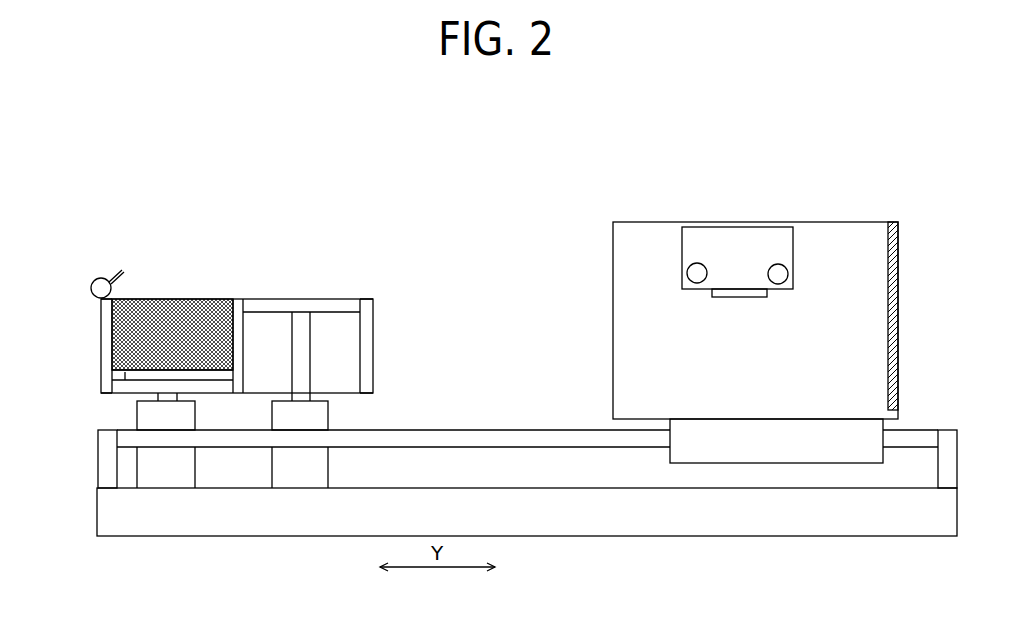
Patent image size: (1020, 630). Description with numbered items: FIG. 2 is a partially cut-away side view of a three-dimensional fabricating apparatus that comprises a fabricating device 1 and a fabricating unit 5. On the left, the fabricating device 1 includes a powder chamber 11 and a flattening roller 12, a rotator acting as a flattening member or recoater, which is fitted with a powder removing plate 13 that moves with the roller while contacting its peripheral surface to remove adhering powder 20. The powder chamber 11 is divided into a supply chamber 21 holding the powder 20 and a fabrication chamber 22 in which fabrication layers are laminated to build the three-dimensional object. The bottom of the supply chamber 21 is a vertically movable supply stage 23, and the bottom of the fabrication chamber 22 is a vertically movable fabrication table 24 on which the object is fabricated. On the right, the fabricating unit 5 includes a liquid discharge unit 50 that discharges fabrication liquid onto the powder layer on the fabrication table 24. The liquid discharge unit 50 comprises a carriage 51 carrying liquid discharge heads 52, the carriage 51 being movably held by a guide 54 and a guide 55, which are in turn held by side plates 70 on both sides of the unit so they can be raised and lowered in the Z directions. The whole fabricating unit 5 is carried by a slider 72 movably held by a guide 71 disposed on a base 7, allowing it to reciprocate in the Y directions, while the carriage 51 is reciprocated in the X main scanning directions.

The fabricating device 1 is at (234, 303).
The powder chamber 11 is at (327, 285).
The flattening roller 12 is at (94, 280).
The powder removing plate 13 is at (121, 263).
The powder 20 is at (172, 307).
The supply chamber 21 is at (107, 318).
The fabrication chamber 22 is at (367, 357).
The supply stage 23 is at (123, 367).
The fabrication table 24 is at (268, 308).
The fabricating unit 5 is at (718, 288).
The liquid discharge unit 50 is at (677, 258).
The carriage 51 is at (732, 243).
The liquid discharge head 52 is at (742, 293).
The guide 54 is at (785, 265).
The guide 55 is at (693, 263).
The base 7 is at (610, 528).
The side plate 70 is at (625, 347).
The guide 71 is at (475, 438).
The slider 72 is at (780, 455).